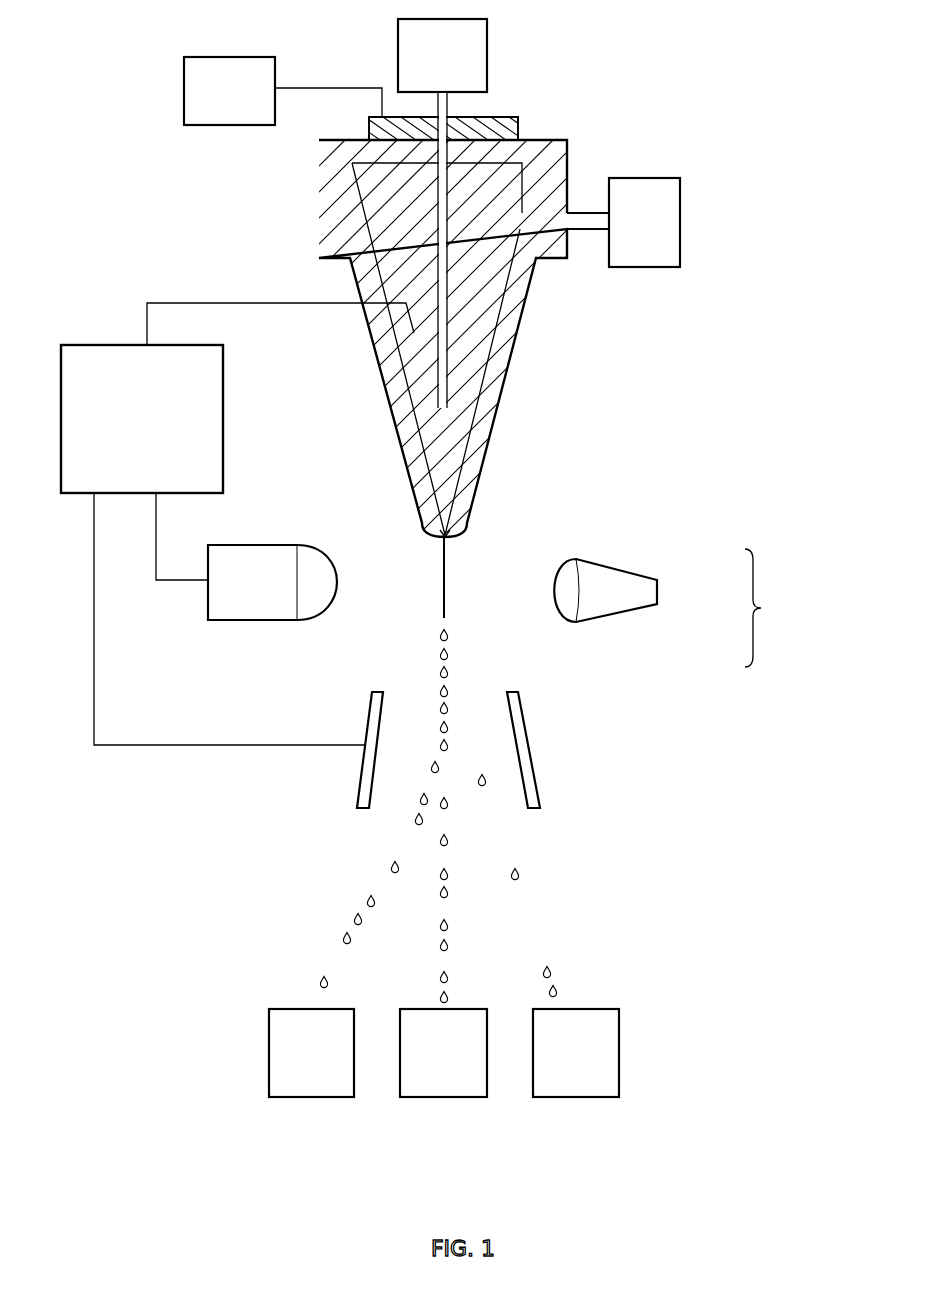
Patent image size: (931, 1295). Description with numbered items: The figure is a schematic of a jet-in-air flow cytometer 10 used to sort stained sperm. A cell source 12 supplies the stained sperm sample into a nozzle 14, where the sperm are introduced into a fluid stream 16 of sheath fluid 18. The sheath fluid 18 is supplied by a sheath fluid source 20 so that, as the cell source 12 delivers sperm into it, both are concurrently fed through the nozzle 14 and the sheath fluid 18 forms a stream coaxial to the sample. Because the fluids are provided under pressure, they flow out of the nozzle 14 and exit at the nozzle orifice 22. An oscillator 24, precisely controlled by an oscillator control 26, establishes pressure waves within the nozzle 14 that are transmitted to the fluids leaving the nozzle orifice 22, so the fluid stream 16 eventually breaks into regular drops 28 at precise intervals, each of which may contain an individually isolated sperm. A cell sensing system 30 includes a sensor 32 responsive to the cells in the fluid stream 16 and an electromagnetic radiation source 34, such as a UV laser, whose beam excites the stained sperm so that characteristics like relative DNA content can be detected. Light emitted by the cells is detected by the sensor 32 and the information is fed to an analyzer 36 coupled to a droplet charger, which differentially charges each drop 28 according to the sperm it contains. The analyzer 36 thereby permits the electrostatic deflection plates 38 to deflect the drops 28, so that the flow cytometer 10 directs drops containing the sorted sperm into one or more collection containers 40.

The flow cytometer 10 is at (75, 24).
The cell source 12 is at (442, 55).
The nozzle 14 is at (498, 343).
The fluid stream 16 is at (447, 577).
The sheath fluid 18 is at (464, 250).
The sheath fluid source 20 is at (623, 222).
The nozzle orifice 22 is at (389, 530).
The oscillator 24 is at (508, 117).
The oscillator control 26 is at (283, 91).
The drops 28 is at (448, 655).
The cell sensing system 30 is at (779, 608).
The sensor 32 is at (272, 582).
The electromagnetic radiation source 34 is at (613, 588).
The analyzer 36 is at (237, 524).
The electrostatic deflection plates 38 is at (362, 778).
The collection containers 40 is at (444, 1053).